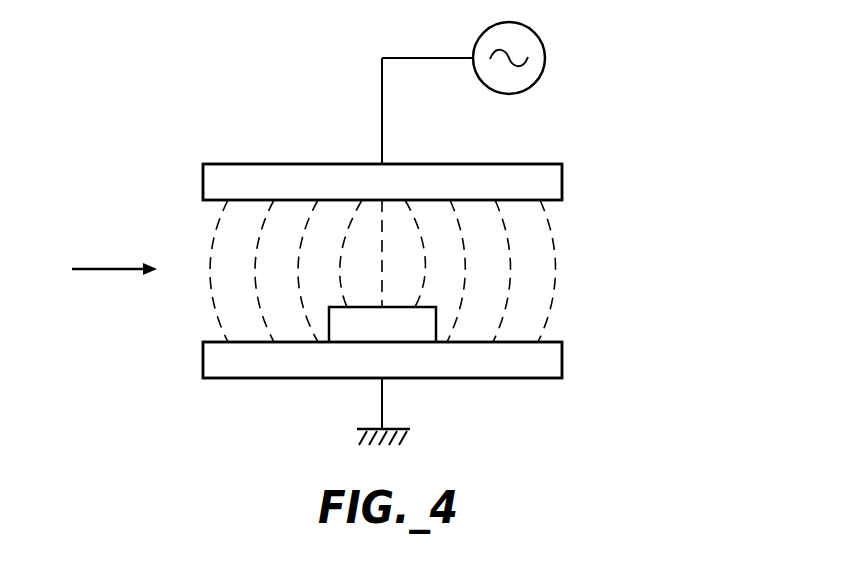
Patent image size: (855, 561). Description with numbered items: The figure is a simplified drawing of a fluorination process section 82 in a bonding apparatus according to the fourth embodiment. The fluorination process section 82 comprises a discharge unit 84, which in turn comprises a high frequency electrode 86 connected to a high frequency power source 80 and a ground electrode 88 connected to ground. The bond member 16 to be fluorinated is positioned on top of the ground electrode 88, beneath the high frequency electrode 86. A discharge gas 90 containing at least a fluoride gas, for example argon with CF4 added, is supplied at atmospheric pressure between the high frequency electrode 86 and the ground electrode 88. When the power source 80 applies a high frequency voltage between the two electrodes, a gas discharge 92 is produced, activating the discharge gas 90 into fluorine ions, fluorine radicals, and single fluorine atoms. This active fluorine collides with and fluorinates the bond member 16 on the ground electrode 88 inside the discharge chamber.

The fluorination process section 82 is at (226, 124).
The high frequency electrode 86 is at (440, 171).
The high frequency power source 80 is at (505, 94).
The gas discharge 92 is at (556, 262).
The bond member 16 is at (400, 330).
The ground electrode 88 is at (475, 370).
The discharge unit 84 is at (242, 394).
The discharge gas 90 is at (96, 270).